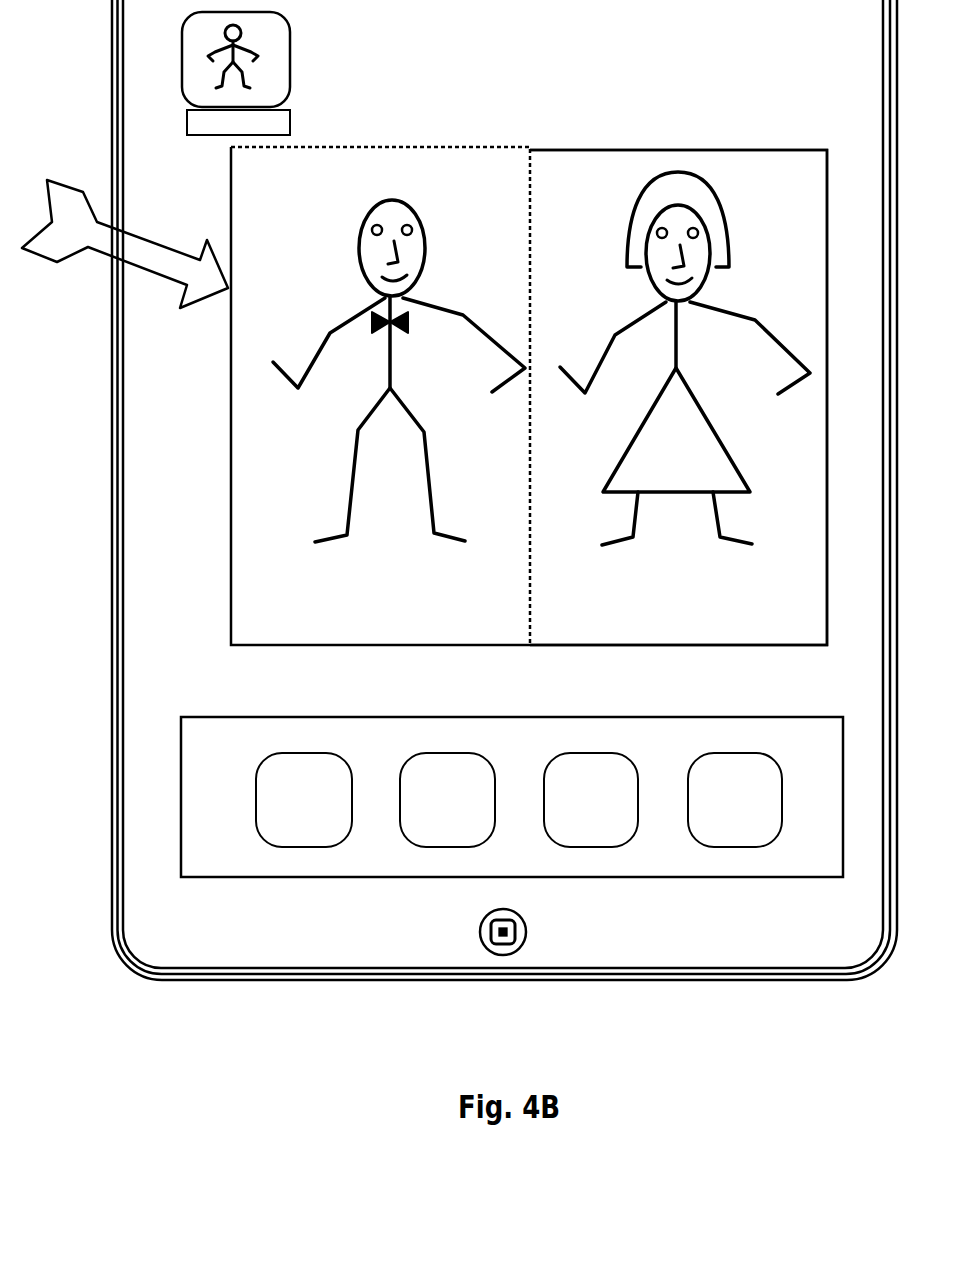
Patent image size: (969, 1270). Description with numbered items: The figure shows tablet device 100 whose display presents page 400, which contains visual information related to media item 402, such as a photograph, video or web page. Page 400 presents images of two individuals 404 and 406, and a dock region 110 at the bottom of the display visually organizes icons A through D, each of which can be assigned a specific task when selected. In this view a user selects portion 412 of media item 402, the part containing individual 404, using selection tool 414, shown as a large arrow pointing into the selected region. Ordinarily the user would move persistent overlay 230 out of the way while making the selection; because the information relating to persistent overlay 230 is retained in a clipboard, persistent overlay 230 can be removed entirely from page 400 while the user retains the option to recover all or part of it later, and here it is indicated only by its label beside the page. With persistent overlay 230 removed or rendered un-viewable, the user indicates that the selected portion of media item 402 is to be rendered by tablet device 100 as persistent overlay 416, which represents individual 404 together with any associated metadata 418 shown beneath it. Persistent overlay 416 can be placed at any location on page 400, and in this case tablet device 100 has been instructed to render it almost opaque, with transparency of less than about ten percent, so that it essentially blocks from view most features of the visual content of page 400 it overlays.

The tablet device 100 is at (662, 1042).
The dock region 110 is at (512, 797).
The persistent overlay 230 is at (494, 396).
The page 400 is at (502, 444).
The media item 402 is at (678, 397).
The individual 404 is at (399, 371).
The individual 406 is at (685, 361).
The portion 412 is at (477, 138).
The selection tool 414 is at (125, 244).
The persistent overlay 416 is at (310, 54).
The metadata 418 is at (238, 122).